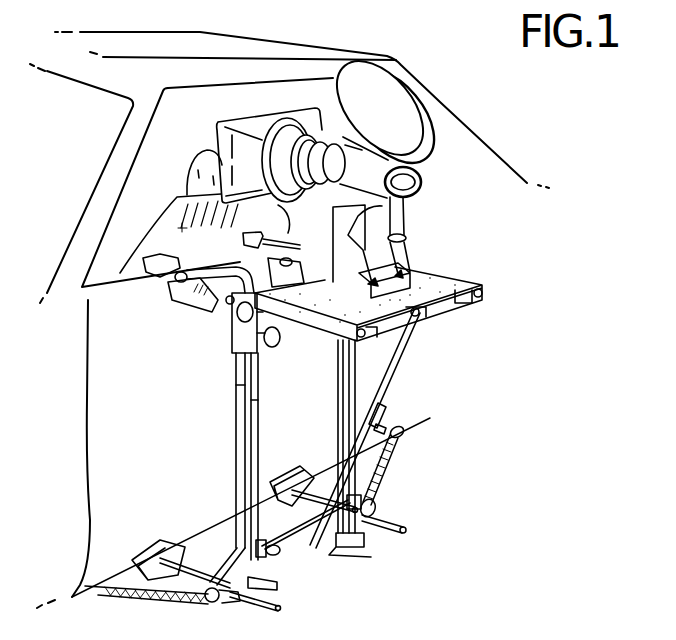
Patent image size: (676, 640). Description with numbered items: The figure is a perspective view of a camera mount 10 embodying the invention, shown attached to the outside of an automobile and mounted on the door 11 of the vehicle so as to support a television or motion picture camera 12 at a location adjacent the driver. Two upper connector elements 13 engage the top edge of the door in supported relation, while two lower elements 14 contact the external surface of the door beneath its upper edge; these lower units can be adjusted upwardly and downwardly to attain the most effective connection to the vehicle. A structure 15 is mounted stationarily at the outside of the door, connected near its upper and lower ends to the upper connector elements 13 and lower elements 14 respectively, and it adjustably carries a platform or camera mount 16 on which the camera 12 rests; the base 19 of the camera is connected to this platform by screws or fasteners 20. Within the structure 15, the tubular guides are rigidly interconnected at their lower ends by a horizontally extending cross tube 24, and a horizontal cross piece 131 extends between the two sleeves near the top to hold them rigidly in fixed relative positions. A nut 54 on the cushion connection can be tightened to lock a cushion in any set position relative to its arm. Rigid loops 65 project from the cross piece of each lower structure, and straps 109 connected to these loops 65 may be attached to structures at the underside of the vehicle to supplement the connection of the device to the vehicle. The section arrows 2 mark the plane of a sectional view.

The camera mount 10 is at (498, 270).
The door 11 is at (393, 407).
The camera 12 is at (398, 127).
The upper connector elements 13 is at (167, 284).
The lower elements 14 is at (393, 520).
The structure 15 is at (236, 428).
The platform or camera mount 16 is at (438, 278).
The base 19 is at (343, 283).
The screws or fasteners 20 is at (376, 282).
The cross tube 24 is at (290, 537).
The nut 54 is at (190, 298).
The rigid loops 65 is at (356, 540).
The straps 109 is at (143, 600).
The horizontal cross piece 131 is at (290, 350).
The section line 2- 2 is at (182, 228).